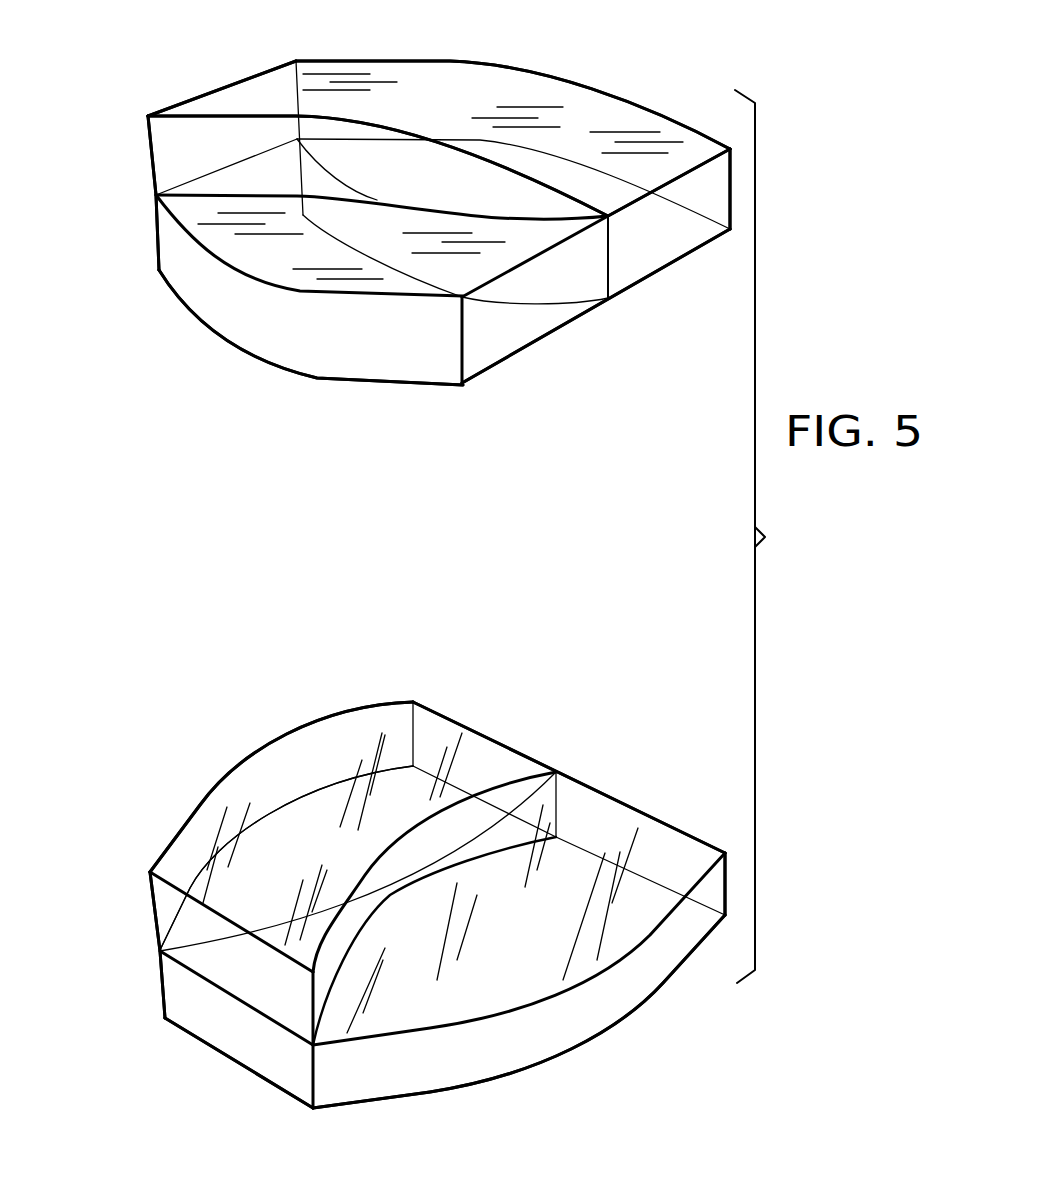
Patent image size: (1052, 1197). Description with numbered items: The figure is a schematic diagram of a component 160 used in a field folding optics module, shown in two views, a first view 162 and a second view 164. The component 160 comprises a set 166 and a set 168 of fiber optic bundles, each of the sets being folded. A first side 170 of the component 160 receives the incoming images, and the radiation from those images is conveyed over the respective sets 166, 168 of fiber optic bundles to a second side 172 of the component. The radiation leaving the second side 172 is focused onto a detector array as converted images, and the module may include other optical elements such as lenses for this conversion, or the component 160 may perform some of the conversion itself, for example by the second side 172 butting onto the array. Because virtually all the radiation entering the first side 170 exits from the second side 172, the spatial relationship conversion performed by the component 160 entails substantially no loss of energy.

The component 160 is at (776, 536).
The first view 162 is at (118, 355).
The second view 164 is at (118, 1075).
The set of fiber optic bundles 166 is at (485, 87).
The set of fiber optic bundles 168 is at (338, 362).
The first side 170 is at (498, 338).
The second side 172 is at (213, 92).